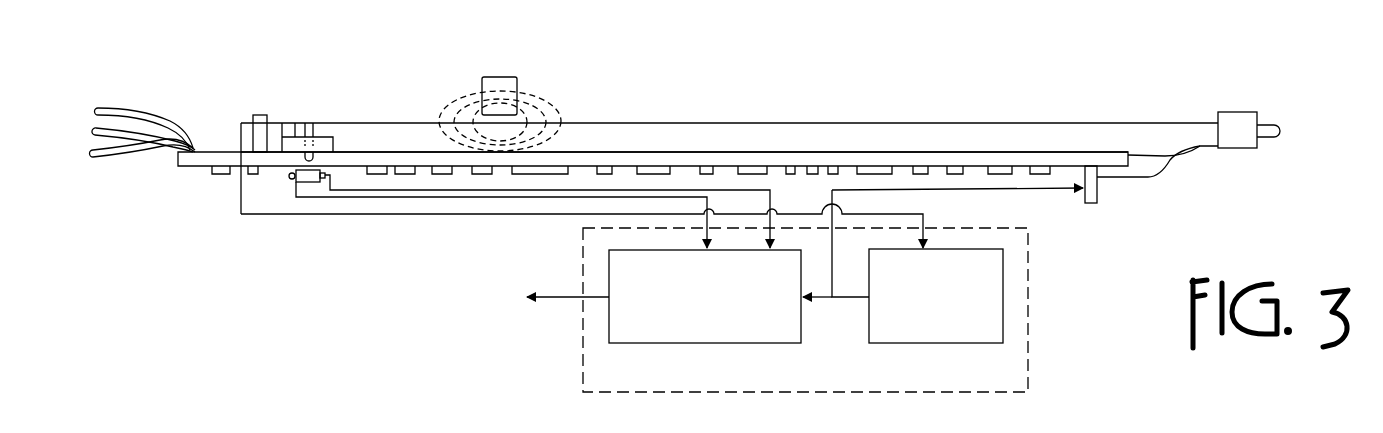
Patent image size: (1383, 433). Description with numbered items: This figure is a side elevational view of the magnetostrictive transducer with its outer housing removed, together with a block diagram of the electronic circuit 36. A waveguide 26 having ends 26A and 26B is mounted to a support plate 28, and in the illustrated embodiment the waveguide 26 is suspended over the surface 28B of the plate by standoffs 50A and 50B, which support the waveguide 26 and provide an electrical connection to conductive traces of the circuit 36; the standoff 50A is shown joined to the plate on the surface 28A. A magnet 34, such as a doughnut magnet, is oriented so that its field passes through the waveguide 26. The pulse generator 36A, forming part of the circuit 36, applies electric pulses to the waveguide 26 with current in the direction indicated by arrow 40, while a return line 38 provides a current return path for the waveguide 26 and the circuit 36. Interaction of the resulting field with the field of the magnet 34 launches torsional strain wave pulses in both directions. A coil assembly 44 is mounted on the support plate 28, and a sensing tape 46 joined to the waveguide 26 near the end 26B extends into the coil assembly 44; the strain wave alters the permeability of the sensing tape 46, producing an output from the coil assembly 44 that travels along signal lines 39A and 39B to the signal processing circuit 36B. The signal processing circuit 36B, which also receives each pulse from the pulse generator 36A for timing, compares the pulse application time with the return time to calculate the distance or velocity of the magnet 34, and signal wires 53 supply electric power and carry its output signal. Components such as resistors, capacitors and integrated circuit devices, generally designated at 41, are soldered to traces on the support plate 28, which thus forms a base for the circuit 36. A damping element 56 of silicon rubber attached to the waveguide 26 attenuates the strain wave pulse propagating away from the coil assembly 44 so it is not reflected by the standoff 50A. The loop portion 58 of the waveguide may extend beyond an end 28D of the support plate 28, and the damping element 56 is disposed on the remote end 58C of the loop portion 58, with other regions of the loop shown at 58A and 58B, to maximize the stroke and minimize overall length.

The waveguide 26 is at (637, 123).
The waveguide end 26A is at (1086, 198).
The waveguide end 26B is at (243, 126).
The support plate 28 is at (973, 158).
The surface of support plate 28A is at (835, 170).
The surface of support plate 28B is at (783, 152).
The end of support plate 28D is at (1167, 157).
The magnet 34 is at (503, 78).
The electronic circuit 36 is at (836, 310).
The pulse generator 36A is at (880, 345).
The signal processing circuit 36B is at (650, 345).
The return line 38 is at (241, 193).
The signal line 39A is at (335, 198).
The signal line 39B is at (413, 190).
The arrow 40 is at (1113, 110).
The circuit components 41 is at (979, 179).
The coil assembly 44 is at (287, 181).
The sensing tape 46 is at (320, 130).
The standoff 50A is at (1098, 203).
The standoff 50B is at (259, 115).
The signal wires 53 is at (134, 100).
The damping element 56 is at (1240, 112).
The loop portion 58 is at (1253, 49).
The connector lower part 58A is at (1197, 148).
The connector upper part 58B is at (1240, 60).
The remote end of loop portion 58C is at (1272, 124).